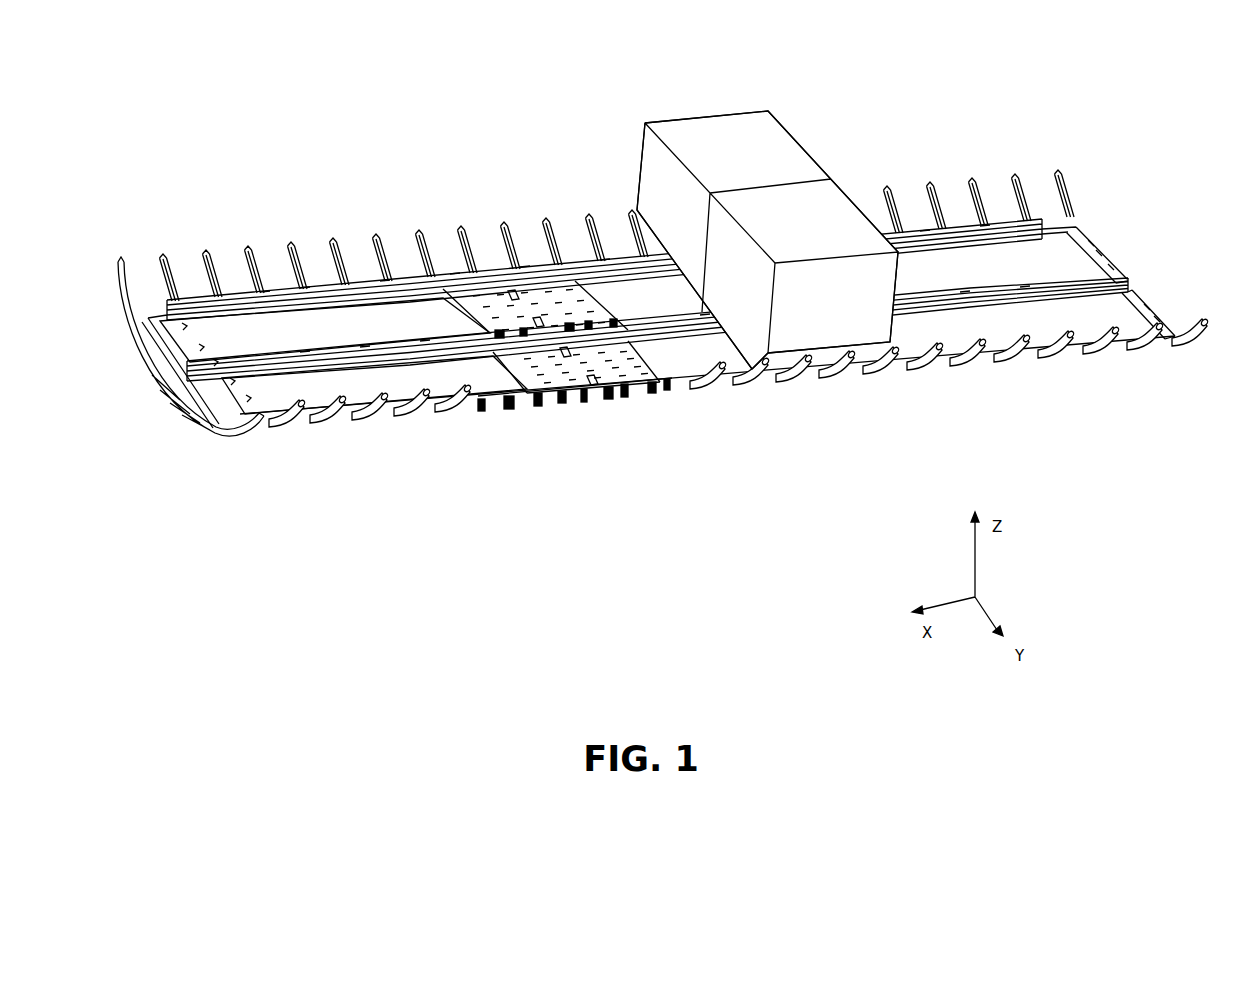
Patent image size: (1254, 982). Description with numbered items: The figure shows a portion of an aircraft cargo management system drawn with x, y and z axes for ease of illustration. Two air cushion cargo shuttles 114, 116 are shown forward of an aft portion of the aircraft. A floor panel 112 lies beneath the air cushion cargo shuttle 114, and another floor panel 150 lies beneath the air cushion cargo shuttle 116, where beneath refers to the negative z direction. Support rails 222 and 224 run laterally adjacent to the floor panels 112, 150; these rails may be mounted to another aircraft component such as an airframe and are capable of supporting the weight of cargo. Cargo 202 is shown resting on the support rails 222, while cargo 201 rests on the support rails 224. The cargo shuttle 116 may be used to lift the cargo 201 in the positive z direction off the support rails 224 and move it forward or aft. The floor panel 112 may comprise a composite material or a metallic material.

The floor panel 112 is at (298, 380).
The air cushion cargo shuttle 114 is at (620, 357).
The air cushion cargo shuttle 116 is at (562, 297).
The floor panel 150 is at (306, 323).
The cargo 201 is at (768, 160).
The cargo 202 is at (847, 303).
The support rails 222 is at (468, 348).
The support rails 224 is at (455, 340).